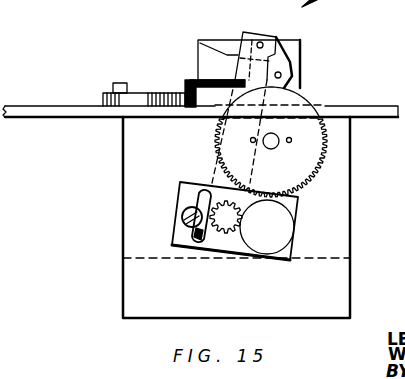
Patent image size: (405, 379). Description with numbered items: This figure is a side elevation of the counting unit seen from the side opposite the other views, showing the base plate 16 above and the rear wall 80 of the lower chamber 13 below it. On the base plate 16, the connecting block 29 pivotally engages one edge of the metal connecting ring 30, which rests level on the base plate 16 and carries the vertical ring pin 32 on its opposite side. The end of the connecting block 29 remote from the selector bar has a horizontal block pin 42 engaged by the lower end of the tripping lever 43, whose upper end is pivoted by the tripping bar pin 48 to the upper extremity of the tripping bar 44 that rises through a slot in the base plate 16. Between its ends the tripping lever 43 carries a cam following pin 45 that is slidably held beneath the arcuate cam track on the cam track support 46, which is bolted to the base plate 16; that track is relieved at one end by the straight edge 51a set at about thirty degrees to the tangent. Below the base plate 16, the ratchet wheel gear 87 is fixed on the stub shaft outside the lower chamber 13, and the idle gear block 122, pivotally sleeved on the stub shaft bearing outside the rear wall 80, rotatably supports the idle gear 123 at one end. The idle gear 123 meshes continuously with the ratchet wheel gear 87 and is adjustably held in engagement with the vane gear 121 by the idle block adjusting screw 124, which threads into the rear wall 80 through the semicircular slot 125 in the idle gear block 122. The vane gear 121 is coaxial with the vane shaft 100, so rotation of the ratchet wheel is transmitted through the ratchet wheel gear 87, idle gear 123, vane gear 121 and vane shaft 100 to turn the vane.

The lower chamber 13 is at (112, 208).
The base plate 16 is at (54, 111).
The connecting block 29 is at (187, 80).
The connecting ring 30 is at (147, 98).
The ring pin 32 is at (117, 88).
The block pin 42 is at (212, 121).
The tripping lever 43 is at (283, 63).
The tripping bar 44 is at (243, 32).
The cam following pin 45 is at (282, 77).
The cam track support 46 is at (287, 50).
The tripping bar pin 48 is at (262, 42).
The straight edge 51a is at (213, 47).
The rear wall 80 is at (342, 273).
The ratchet wheel gear 87 is at (225, 222).
The vane shaft 100 is at (274, 144).
The vane gear 121 is at (318, 144).
The idle gear block 122 is at (298, 197).
The idle gear 123 is at (283, 231).
The idle block adjusting screw 124 is at (197, 218).
The semicircular slot 125 is at (193, 248).